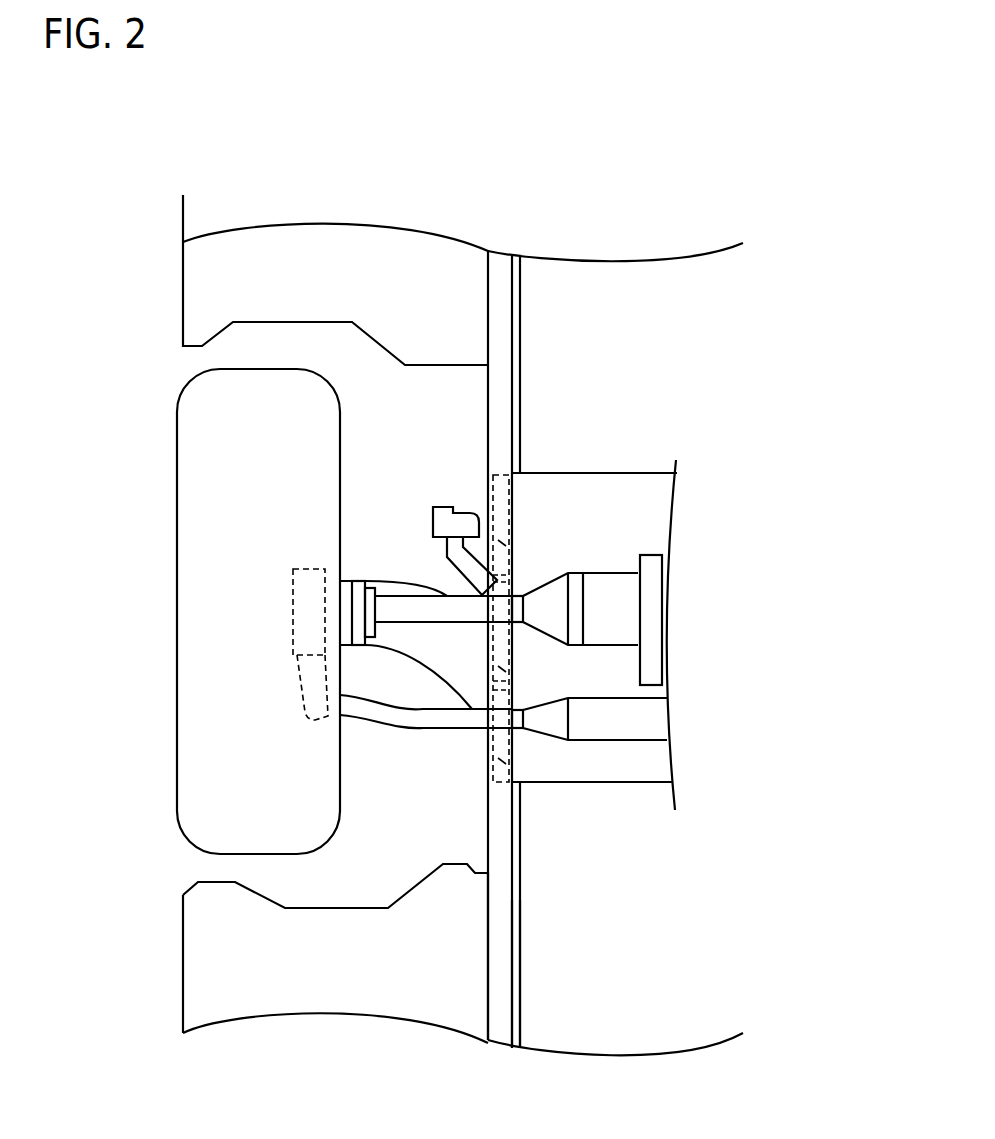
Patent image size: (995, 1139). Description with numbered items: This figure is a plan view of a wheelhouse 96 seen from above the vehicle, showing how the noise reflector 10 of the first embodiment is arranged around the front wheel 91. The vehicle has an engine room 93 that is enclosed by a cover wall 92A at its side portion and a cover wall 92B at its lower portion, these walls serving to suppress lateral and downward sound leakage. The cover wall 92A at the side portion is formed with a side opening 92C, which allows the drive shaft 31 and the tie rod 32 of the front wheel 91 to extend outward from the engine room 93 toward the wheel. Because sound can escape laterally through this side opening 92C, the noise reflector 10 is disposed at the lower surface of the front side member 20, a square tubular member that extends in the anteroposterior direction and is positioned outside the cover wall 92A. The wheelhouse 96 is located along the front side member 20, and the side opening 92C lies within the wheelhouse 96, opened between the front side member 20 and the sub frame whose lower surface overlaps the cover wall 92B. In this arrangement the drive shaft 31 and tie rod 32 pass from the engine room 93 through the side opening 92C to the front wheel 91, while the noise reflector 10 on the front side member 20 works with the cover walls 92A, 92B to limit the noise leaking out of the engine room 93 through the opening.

The noise reflector 10 is at (502, 542).
The front side member 20 is at (498, 1013).
The drive shaft 31 is at (418, 612).
The tie rod 32 is at (393, 710).
The front wheel 91 is at (175, 598).
The cover wall 92A is at (527, 305).
The cover wall 92B is at (608, 295).
The side opening 92C is at (530, 491).
The engine room 93 is at (708, 352).
The wheelhouse 96 is at (252, 352).